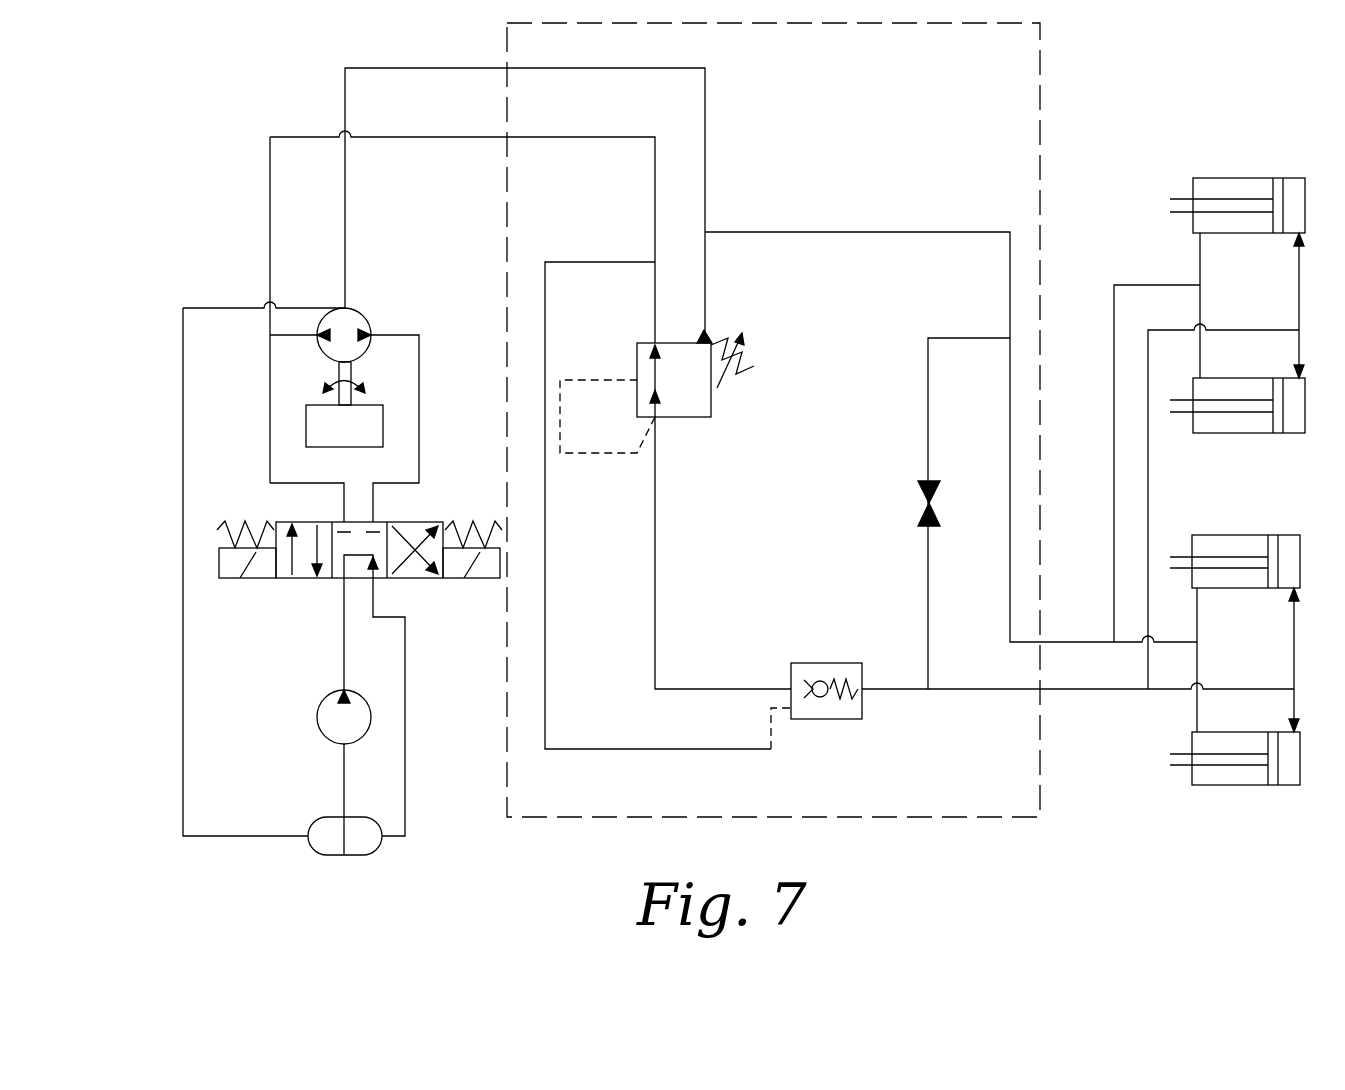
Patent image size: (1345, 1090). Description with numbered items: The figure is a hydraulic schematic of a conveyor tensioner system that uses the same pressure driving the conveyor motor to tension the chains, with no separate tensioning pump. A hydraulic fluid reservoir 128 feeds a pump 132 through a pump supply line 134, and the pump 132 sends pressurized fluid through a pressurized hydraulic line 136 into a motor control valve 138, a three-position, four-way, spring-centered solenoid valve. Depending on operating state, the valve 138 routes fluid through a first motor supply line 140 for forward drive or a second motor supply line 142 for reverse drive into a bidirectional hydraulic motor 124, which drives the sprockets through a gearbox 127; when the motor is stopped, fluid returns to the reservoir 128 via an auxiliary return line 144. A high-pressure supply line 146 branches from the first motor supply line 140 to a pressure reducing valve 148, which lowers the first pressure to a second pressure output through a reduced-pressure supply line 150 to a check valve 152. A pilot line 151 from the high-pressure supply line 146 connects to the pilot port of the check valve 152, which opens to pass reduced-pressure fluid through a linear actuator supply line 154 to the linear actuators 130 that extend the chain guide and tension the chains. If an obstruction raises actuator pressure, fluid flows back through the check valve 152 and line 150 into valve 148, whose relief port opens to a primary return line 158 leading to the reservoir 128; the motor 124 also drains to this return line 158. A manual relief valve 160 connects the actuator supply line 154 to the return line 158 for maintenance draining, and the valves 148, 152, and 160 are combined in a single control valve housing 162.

The bidirectional hydraulic motor 124 is at (355, 320).
The gearbox 127 is at (373, 424).
The hydraulic fluid reservoir 128 is at (362, 850).
The linear actuators 130 is at (1255, 178).
The pump 132 is at (371, 715).
The pump supply line 134 is at (344, 793).
The pressurized hydraulic line 136 is at (344, 622).
The motor control valve 138 is at (232, 498).
The first motor supply line 140 is at (270, 404).
The second motor supply line 142 is at (419, 392).
The auxiliary return line 144 is at (405, 660).
The high-pressure supply line 146 is at (270, 196).
The pressure reducing valve 148 is at (692, 418).
The reduced-pressure supply line 150 is at (655, 592).
The pilot line 151 is at (600, 262).
The check valve 152 is at (848, 652).
The linear actuator supply line 154 is at (905, 690).
The primary return line 158 is at (205, 307).
The manual relief valve 160 is at (970, 478).
The control valve housing 162 is at (890, 817).